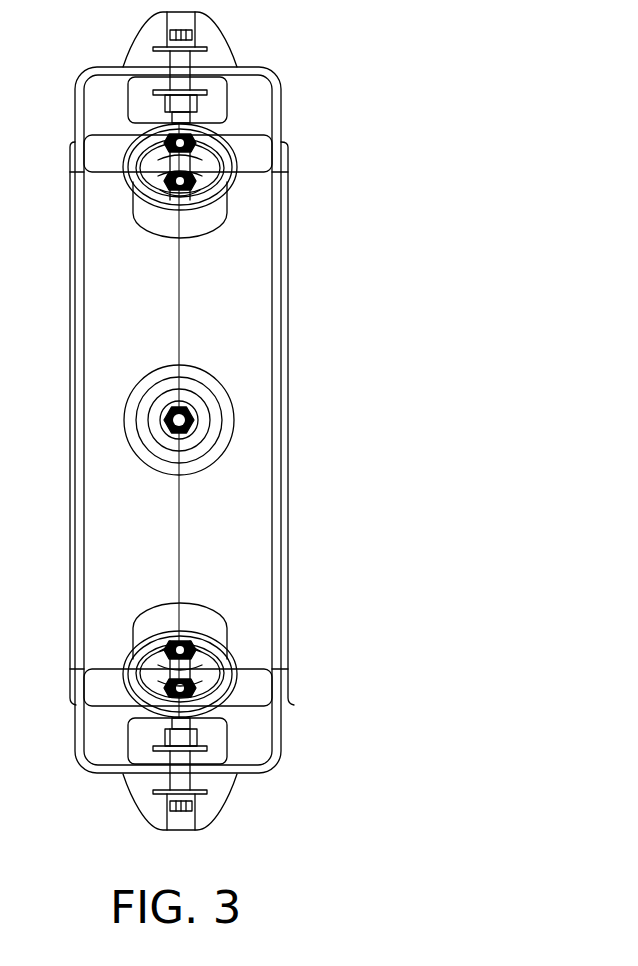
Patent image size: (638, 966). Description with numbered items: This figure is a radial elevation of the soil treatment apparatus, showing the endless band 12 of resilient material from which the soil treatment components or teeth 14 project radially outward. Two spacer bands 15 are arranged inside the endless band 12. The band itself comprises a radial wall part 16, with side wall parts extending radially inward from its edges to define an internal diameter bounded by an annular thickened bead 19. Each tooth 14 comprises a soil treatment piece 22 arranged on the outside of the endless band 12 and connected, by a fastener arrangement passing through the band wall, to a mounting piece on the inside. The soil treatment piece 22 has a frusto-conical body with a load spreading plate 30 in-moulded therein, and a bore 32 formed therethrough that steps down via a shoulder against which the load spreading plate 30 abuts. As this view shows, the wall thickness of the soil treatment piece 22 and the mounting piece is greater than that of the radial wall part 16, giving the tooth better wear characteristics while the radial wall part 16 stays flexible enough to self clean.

The endless band 12 is at (258, 289).
The soil treatment component or tooth 14 is at (222, 417).
The spacer bands 15 is at (102, 687).
The radial wall part 16 is at (235, 773).
The annular thickened bead 19 is at (290, 703).
The soil treatment piece 22 is at (147, 818).
The load spreading plate 30 is at (200, 797).
The bore 32 is at (180, 834).